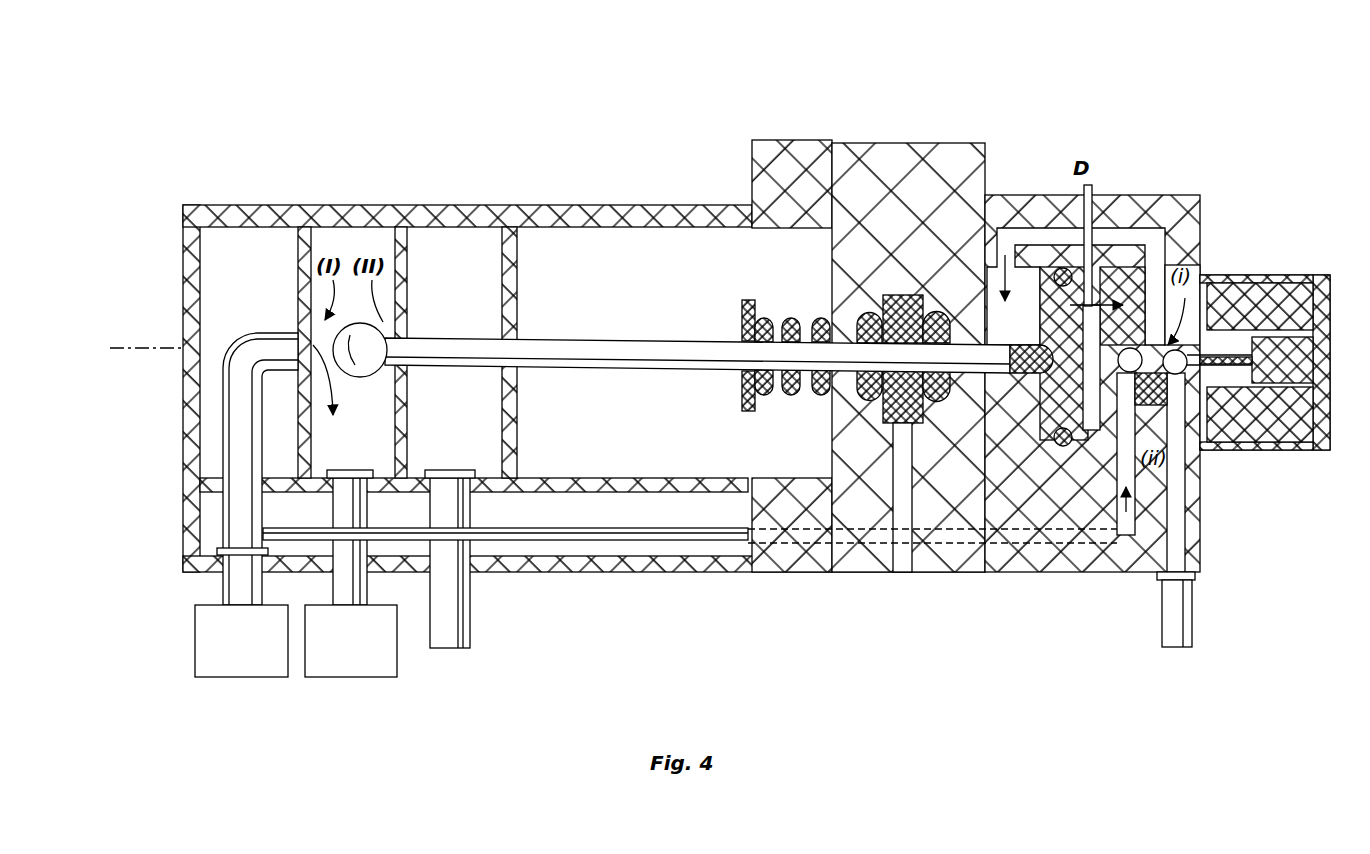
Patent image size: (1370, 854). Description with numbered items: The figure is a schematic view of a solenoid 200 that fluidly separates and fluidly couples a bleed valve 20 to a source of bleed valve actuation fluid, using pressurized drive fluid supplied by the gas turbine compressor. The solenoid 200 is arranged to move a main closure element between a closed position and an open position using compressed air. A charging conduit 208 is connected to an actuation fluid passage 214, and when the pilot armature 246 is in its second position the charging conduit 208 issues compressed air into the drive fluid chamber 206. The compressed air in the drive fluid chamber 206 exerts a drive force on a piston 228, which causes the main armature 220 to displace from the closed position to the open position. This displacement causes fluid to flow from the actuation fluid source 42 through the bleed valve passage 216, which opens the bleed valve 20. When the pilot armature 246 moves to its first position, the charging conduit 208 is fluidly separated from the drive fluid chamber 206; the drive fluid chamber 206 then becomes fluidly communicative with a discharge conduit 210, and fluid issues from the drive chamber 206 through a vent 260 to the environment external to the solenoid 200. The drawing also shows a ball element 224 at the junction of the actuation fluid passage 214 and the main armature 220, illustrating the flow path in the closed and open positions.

The solenoid 200 is at (395, 90).
The drive fluid chamber 206 is at (1076, 286).
The charging conduit 208 is at (690, 532).
The discharge conduit 210 is at (1180, 540).
The actuation fluid passage 214 is at (228, 583).
The bleed valve passage 216 is at (355, 583).
The main armature 220 is at (605, 338).
The valve ball 224 is at (363, 378).
The piston 228 is at (1047, 387).
The pilot armature 246 is at (1237, 282).
The vent 260 is at (1168, 618).
The actuation fluid source 42 is at (241, 641).
The bleed valve 20 is at (351, 641).